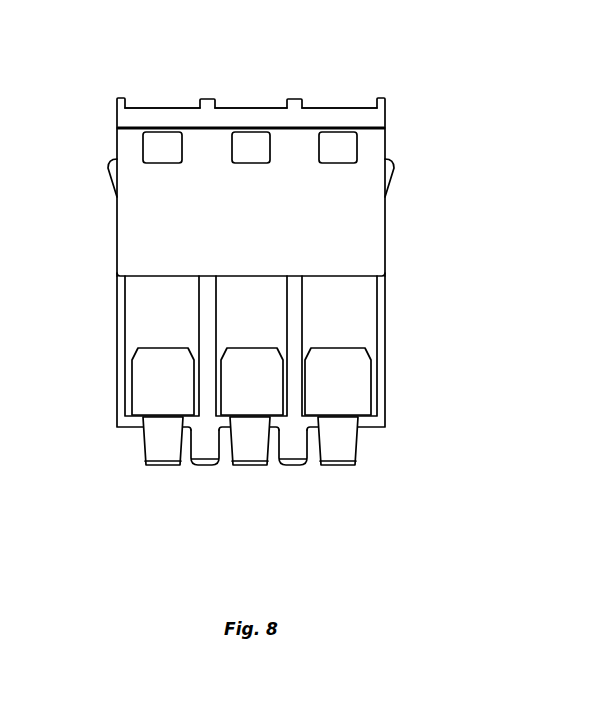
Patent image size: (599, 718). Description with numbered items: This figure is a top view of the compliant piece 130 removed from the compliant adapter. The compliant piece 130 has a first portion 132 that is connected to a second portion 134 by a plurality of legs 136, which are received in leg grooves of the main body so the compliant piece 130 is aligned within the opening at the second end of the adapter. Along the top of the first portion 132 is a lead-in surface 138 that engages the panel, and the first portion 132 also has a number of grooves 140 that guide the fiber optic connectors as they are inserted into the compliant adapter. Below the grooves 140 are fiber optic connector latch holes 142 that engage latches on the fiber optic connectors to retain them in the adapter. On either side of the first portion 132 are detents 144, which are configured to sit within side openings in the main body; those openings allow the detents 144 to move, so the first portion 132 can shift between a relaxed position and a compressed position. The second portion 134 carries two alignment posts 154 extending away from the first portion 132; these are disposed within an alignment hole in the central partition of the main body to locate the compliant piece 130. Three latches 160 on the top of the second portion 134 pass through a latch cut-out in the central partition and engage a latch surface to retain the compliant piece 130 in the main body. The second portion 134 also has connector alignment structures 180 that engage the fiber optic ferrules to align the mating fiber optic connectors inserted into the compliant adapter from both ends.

The compliant piece 130 is at (519, 157).
The first portion 132 is at (391, 229).
The second portion 134 is at (398, 423).
The legs 136 is at (117, 305).
The lead-in surface 138 is at (257, 122).
The grooves 140 is at (347, 108).
The fiber optic connector latch holes 142 is at (358, 143).
The detents 144 is at (395, 164).
The alignment posts 154 is at (203, 468).
The latches 160 is at (158, 468).
The connector alignment structures 180 is at (145, 390).